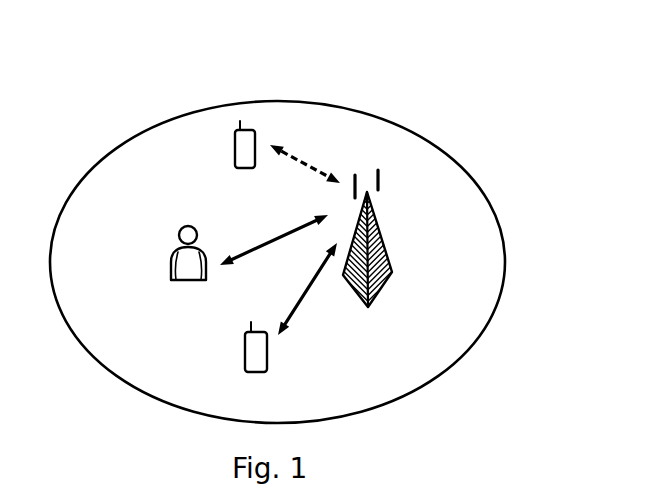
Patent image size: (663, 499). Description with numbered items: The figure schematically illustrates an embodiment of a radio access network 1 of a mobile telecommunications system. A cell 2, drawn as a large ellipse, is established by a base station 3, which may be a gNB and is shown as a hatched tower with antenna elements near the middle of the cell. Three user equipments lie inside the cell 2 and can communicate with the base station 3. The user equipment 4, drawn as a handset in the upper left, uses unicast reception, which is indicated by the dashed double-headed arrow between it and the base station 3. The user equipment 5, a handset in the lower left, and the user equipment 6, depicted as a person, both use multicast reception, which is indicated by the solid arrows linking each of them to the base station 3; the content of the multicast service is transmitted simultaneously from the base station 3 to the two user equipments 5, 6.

The radio access network 1 is at (415, 60).
The cell 2 is at (433, 143).
The base station 3 is at (382, 222).
The user equipment 4 is at (250, 128).
The user equipment 5 is at (245, 343).
The user equipment 6 is at (207, 252).